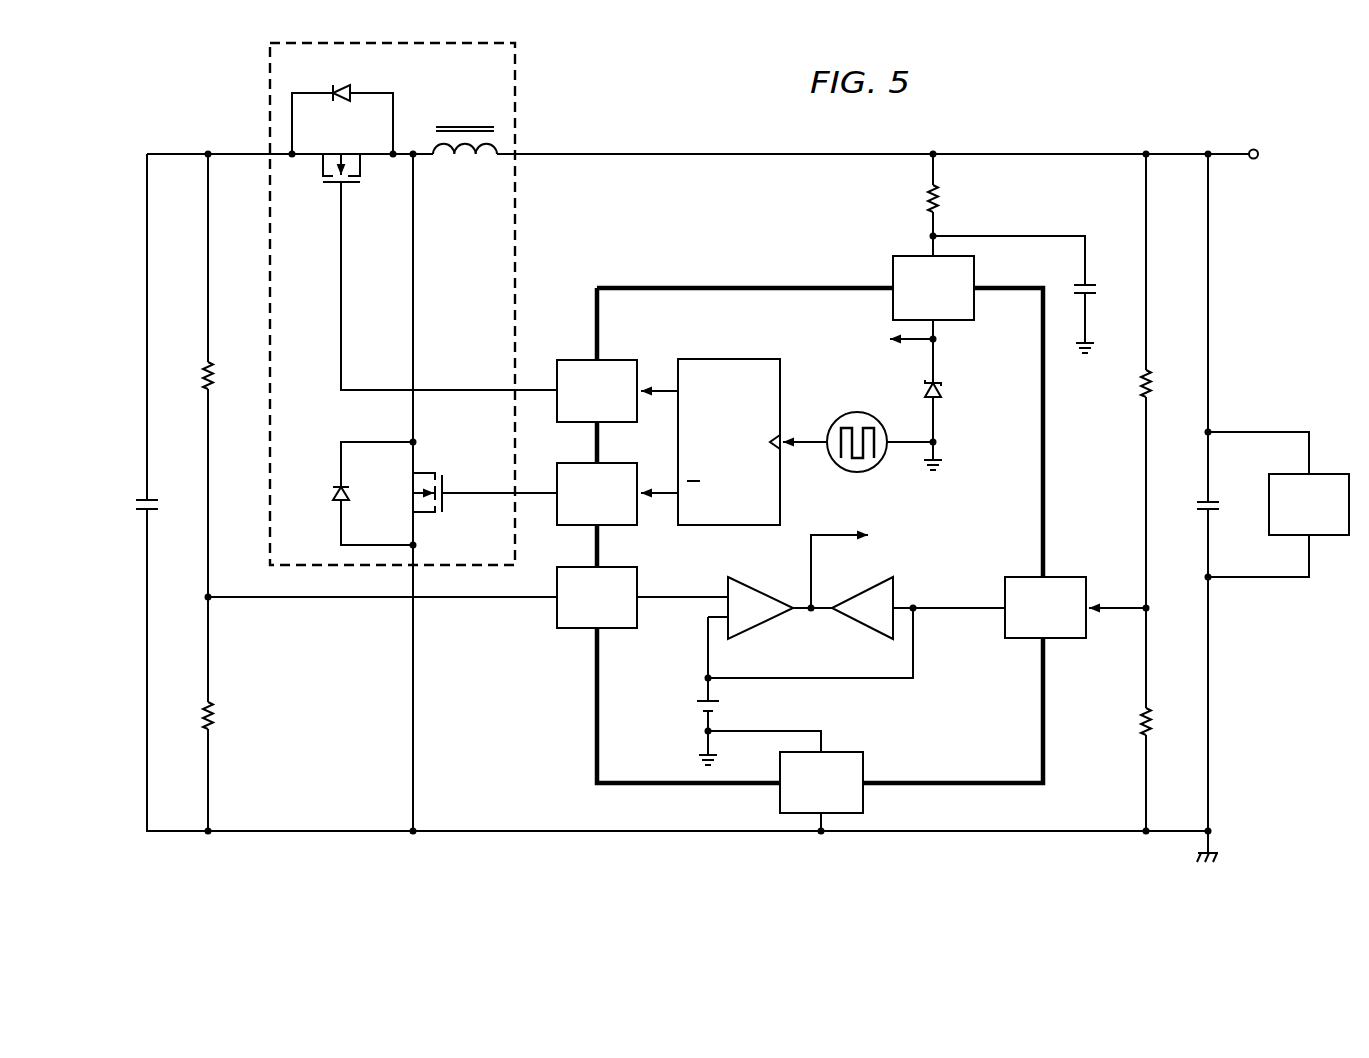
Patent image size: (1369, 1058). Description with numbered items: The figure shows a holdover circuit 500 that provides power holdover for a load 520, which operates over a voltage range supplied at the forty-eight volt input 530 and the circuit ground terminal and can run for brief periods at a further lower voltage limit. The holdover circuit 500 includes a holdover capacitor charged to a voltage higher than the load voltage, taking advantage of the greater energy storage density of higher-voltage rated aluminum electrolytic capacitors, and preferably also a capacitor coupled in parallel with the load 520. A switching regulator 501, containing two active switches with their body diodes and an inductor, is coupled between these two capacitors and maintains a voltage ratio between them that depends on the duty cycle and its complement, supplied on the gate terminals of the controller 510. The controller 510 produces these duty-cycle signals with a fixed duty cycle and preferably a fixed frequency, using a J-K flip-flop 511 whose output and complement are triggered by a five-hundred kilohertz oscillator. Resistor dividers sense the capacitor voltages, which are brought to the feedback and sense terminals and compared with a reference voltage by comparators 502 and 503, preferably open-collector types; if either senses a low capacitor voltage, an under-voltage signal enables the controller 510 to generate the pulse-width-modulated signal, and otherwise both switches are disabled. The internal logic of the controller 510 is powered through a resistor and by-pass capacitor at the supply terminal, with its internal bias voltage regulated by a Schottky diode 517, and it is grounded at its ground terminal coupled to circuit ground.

The holdover circuit 500 is at (1130, 101).
The switching regulator 501 is at (268, 101).
The comparator 502 is at (762, 630).
The comparator 503 is at (862, 630).
The controller 510 is at (853, 494).
The J-K flip-flop 511 is at (749, 454).
The Schottky diode 517 is at (947, 391).
The load 520 is at (1331, 473).
The 48 V input 530 is at (1256, 147).